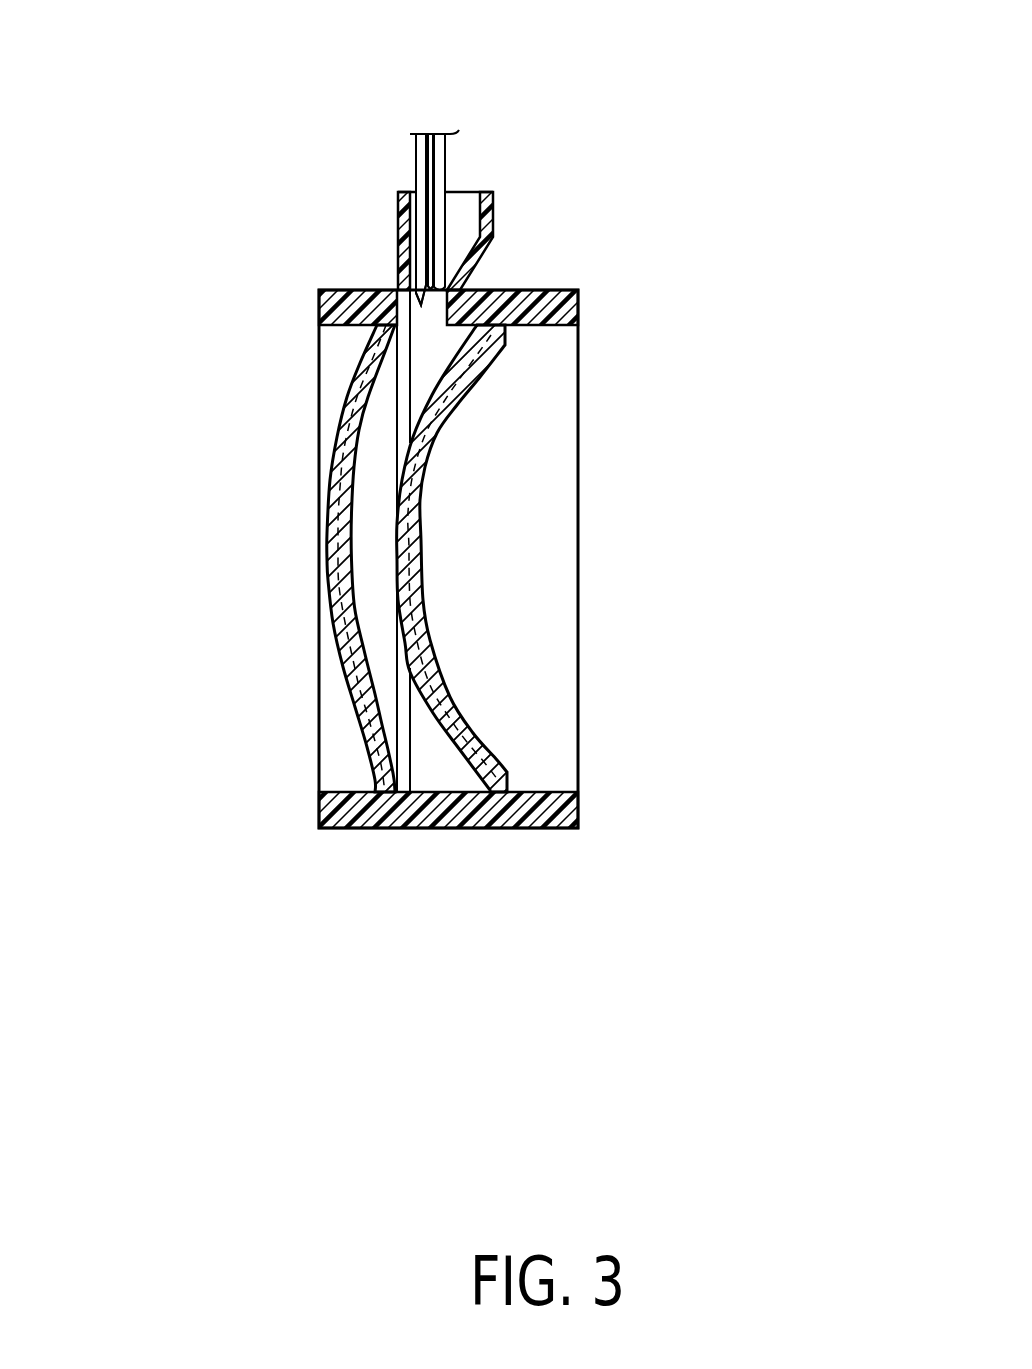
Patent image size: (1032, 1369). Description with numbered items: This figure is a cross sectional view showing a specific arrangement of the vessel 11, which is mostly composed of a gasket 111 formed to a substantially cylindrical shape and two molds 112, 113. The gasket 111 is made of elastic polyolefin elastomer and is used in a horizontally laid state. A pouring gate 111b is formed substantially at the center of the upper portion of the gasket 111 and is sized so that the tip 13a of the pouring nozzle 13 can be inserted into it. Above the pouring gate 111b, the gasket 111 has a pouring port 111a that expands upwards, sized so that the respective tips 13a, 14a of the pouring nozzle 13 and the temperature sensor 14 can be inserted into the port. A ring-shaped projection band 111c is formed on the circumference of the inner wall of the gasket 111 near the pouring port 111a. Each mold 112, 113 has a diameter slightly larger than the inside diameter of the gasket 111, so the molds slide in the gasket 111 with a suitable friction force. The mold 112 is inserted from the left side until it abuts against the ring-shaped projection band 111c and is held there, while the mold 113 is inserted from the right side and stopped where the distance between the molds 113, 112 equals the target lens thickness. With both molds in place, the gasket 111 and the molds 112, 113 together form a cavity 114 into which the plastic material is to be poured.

The vessel 11 is at (612, 262).
The gasket 111 is at (576, 295).
The pouring port 111a is at (494, 205).
The pouring gate 111b is at (60, 122).
The ring-shaped projection band 111c is at (397, 427).
The mold 112 is at (340, 703).
The mold 113 is at (467, 730).
The cavity 114 is at (367, 553).
The pouring nozzle 13 is at (417, 163).
The tip of the pouring nozzle 13a is at (410, 287).
The temperature sensor 14 is at (447, 168).
The tip of the temperature sensor 14a is at (447, 265).